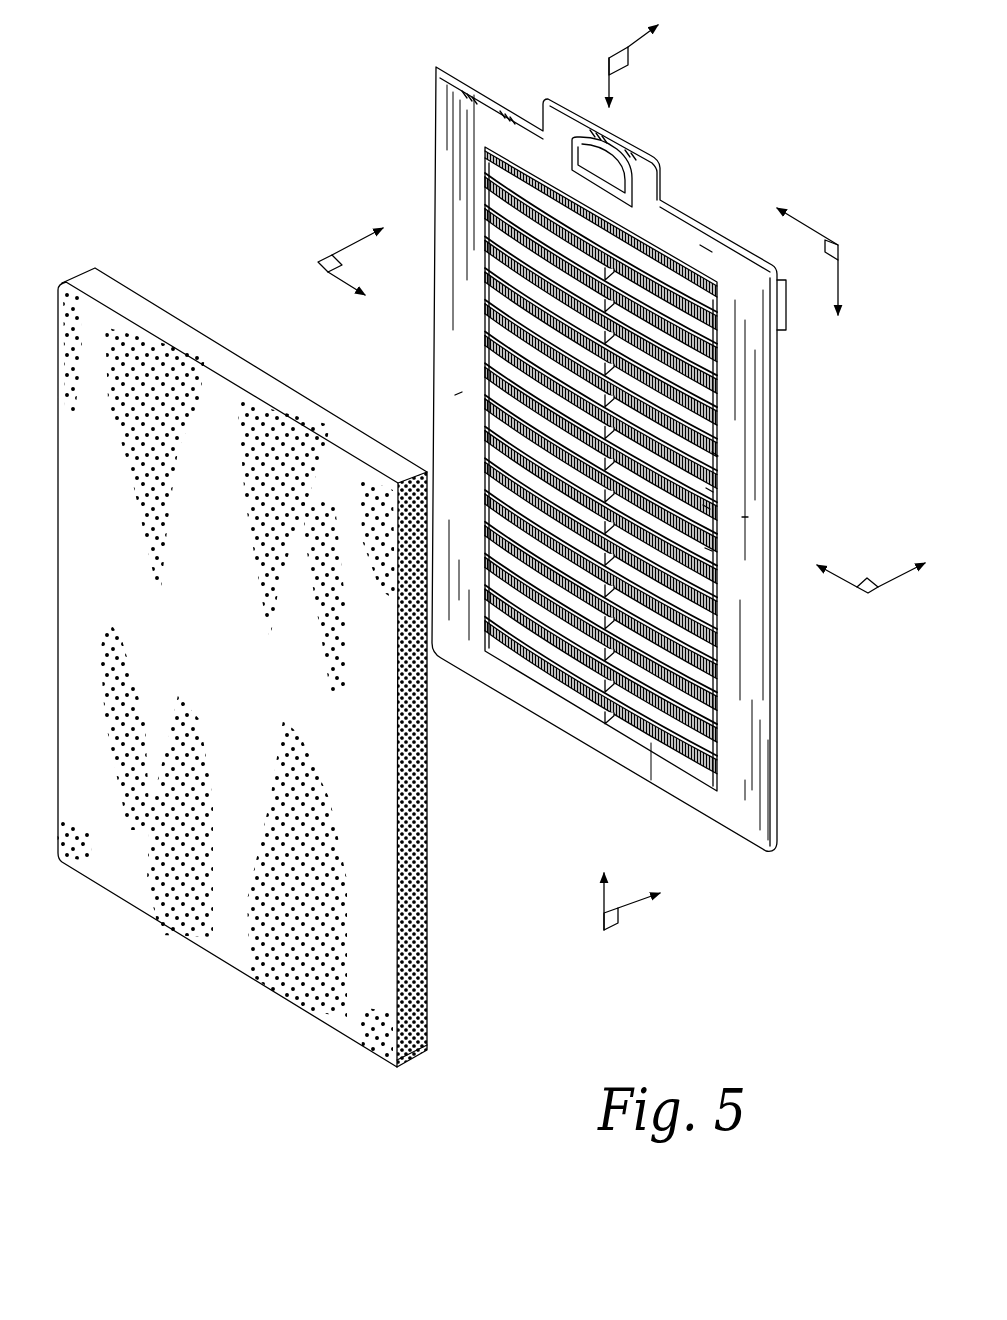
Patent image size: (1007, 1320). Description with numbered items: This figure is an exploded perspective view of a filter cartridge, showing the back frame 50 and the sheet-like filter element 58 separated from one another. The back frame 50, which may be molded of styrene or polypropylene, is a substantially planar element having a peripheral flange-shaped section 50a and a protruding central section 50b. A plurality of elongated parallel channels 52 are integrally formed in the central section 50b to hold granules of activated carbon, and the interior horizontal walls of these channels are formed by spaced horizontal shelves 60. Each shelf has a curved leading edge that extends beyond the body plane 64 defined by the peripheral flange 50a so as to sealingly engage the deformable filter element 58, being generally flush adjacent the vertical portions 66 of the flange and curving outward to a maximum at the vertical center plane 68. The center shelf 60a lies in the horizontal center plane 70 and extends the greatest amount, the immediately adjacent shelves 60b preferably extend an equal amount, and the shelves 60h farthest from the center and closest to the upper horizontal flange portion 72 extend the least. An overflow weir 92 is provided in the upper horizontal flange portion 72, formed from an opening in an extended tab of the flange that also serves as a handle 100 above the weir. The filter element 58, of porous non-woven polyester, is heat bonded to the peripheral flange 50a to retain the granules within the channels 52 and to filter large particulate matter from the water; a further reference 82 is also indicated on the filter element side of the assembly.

The back frame 50 is at (407, 78).
The peripheral flange-shaped section 50a is at (705, 251).
The protruding central section 50b is at (722, 455).
The elongated parallel channels 52 is at (490, 188).
The sheet-like filter element 58 is at (140, 937).
The horizontal shelves 60 is at (722, 622).
The center shelf 60a is at (712, 508).
The immediately adjacent shelves 60b is at (716, 490).
The farthest shelves 60h is at (634, 252).
The body plane 64 is at (832, 250).
The vertical portions of the peripheral flange 66 is at (462, 390).
The vertical center plane 68 is at (628, 65).
The horizontal center plane 70 is at (322, 262).
The upper horizontal flange portion 72 is at (483, 112).
The pad edge 82 is at (430, 950).
The overflow weir 92 is at (585, 188).
The handle 100 is at (658, 150).